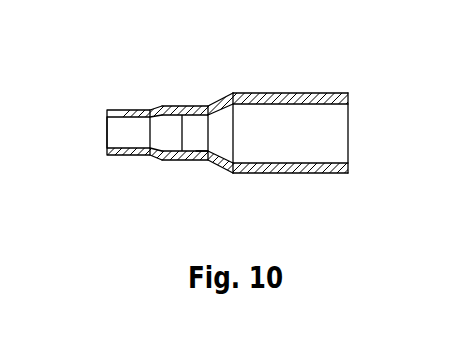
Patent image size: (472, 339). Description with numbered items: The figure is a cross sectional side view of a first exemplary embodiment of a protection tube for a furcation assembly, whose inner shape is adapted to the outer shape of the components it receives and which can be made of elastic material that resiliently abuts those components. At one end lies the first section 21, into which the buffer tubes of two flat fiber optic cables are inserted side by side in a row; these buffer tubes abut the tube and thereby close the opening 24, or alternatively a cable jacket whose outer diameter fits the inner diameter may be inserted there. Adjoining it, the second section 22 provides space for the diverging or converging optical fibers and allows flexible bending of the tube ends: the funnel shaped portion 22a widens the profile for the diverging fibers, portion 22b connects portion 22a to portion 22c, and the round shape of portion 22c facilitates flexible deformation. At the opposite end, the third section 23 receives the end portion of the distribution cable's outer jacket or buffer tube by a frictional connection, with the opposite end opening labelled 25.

The first section 21 is at (347, 86).
The second section 22 is at (228, 86).
The funnel shaped portion 22a is at (217, 163).
The portion 22b is at (202, 158).
The portion 22c is at (157, 157).
The third section 23 is at (150, 86).
The opening 24 is at (348, 133).
The small-diameter end opening 25 is at (108, 133).